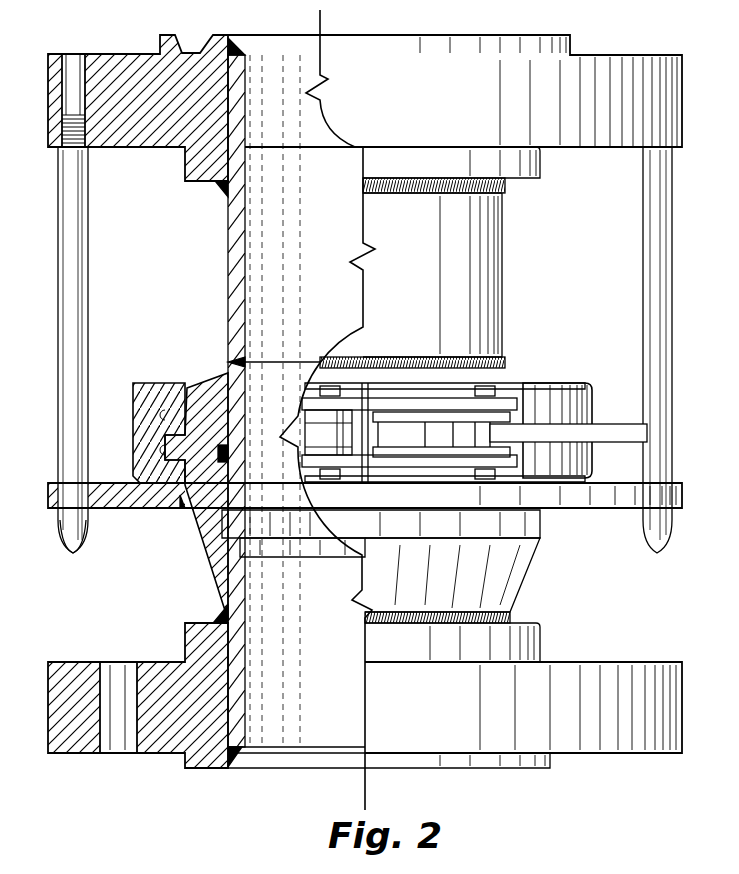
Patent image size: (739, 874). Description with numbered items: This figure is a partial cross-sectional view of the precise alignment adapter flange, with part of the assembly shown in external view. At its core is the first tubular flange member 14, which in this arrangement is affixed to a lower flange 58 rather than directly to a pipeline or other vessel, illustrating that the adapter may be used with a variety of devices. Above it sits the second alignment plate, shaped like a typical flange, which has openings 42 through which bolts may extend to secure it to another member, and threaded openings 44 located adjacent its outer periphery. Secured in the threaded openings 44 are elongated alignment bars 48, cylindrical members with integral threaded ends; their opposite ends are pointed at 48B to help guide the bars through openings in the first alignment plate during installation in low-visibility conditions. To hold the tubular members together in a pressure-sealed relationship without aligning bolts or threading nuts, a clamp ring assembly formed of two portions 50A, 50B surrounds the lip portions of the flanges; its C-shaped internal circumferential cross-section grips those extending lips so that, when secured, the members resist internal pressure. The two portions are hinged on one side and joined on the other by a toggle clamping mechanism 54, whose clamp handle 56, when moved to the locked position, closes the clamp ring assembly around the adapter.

The first tubular flange member 14 is at (218, 573).
The openings 42 is at (105, 72).
The threaded openings 44 is at (70, 147).
The alignment bars 48 is at (70, 278).
The pointed end 48B is at (75, 553).
The clamp ring assembly portion 50A is at (168, 395).
The clamp ring assembly portion 50B is at (556, 400).
The toggle clamping mechanism 54 is at (520, 360).
The clamp handle 56 is at (640, 437).
The lower flange 58 is at (650, 745).